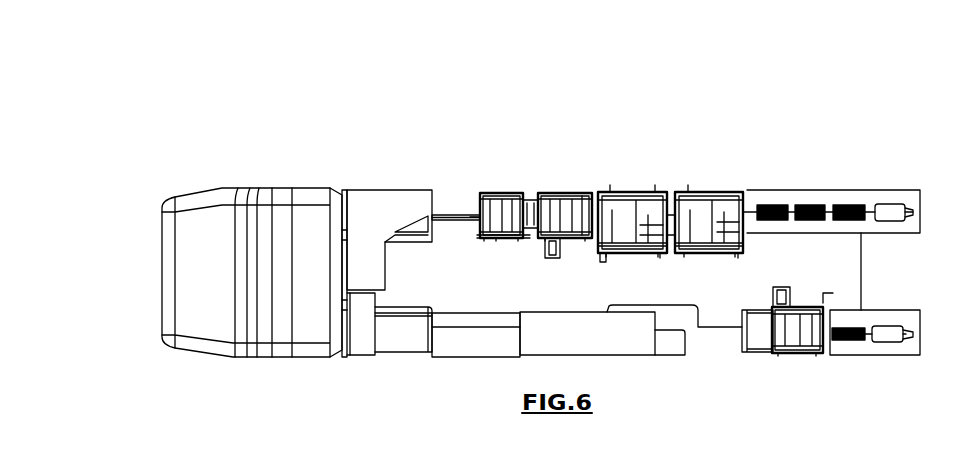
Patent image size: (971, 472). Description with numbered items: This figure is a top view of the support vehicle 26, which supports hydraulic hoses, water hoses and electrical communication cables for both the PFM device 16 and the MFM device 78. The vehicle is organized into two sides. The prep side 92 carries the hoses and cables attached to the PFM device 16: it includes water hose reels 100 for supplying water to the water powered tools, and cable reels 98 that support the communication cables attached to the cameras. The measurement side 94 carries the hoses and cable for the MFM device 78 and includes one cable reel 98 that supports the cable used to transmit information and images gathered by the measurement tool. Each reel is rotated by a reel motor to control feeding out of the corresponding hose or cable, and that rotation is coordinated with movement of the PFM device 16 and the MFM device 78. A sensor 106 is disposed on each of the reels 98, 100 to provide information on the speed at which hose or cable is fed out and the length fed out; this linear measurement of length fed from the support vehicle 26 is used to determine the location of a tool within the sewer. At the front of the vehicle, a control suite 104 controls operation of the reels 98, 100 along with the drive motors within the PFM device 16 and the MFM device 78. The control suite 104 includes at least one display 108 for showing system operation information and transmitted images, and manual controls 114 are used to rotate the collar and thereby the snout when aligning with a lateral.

The support vehicle 26 is at (388, 149).
The control suite 104 is at (387, 197).
The manual controls 114 is at (450, 223).
The display 108 is at (357, 342).
The cable reel 98 is at (563, 195).
The water hose reel 100 is at (705, 192).
The sensor 106 is at (587, 240).
The prep side 92 is at (727, 181).
The PFM device 16 is at (838, 194).
The measurement side 94 is at (750, 362).
The MFM device 78 is at (903, 304).